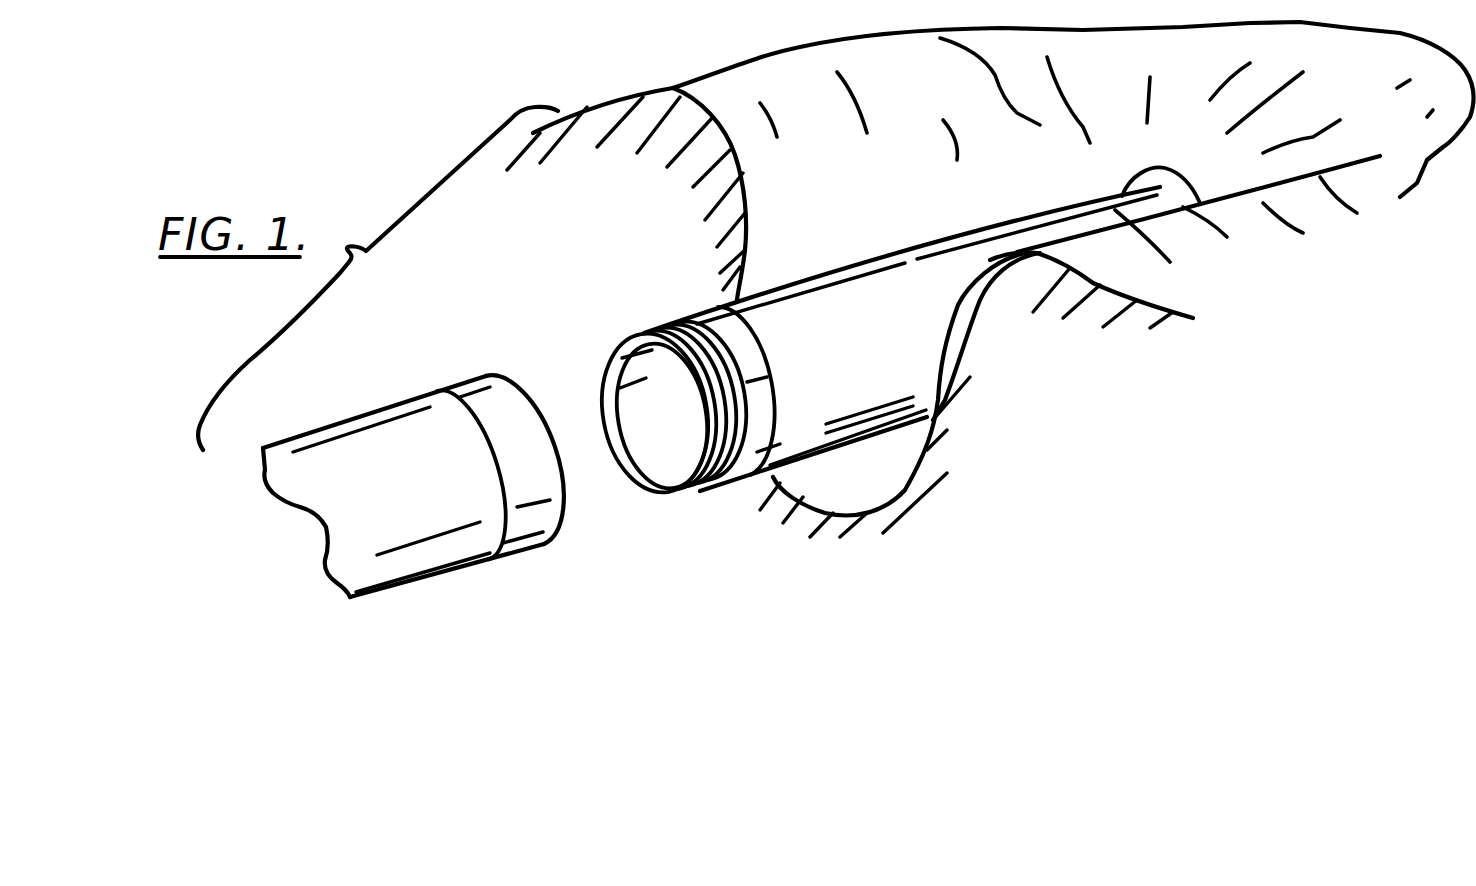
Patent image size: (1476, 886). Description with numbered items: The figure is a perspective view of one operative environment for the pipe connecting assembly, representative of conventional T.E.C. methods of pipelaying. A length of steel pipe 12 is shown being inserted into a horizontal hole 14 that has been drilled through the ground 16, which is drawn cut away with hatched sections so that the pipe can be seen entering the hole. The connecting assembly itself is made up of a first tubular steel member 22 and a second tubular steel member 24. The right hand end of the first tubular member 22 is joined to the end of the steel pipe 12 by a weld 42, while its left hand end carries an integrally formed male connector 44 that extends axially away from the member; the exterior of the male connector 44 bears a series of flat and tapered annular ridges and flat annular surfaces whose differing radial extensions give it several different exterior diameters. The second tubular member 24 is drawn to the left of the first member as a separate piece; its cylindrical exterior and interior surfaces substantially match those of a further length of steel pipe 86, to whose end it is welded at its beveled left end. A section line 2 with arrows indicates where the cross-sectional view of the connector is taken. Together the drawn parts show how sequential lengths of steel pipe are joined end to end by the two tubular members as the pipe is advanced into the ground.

The section line for FIG. 2 is at (745, 382).
The length of steel pipe 12 is at (910, 363).
The horizontal hole 14 is at (1122, 174).
The ground 16 is at (1175, 270).
The first tubular member 22 is at (741, 502).
The second tubular member 24 is at (516, 560).
The weld 42 is at (762, 400).
The male connector 44 is at (610, 343).
The length of steel pipe 86 is at (307, 487).